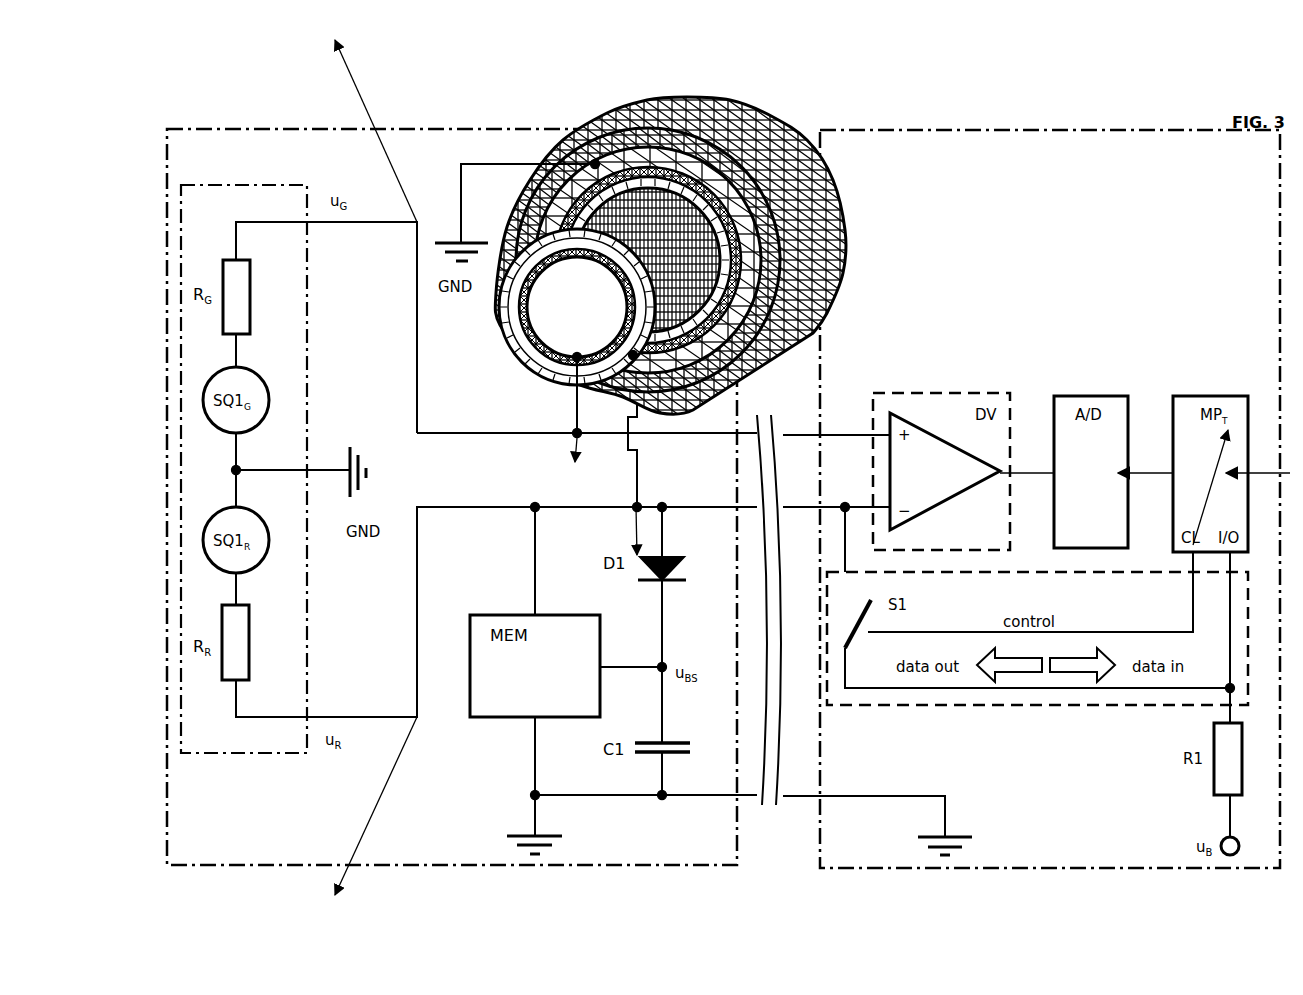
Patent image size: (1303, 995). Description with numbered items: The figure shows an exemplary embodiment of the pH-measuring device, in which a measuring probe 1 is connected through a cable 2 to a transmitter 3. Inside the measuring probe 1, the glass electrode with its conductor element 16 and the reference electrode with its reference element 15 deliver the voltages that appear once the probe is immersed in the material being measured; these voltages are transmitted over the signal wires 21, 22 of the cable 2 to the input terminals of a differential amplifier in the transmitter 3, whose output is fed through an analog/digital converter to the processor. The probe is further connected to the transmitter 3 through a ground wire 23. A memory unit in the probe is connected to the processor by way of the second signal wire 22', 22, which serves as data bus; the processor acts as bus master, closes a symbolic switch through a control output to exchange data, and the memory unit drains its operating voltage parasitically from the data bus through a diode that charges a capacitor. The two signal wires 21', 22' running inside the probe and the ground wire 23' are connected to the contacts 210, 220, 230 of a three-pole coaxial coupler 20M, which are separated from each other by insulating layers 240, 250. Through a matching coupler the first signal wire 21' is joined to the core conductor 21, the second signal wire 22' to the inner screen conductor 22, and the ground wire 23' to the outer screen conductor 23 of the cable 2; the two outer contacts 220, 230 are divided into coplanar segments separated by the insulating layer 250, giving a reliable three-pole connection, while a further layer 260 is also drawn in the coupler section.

The measuring probe 1 is at (452, 497).
The cable 2 is at (774, 610).
The transmitter 3 is at (1050, 499).
The reference element 15 is at (297, 713).
The conductor element 16 is at (293, 228).
The coaxial coupler 20M is at (848, 190).
The core conductor 21 is at (836, 422).
The first signal wire 21' is at (587, 421).
The inner screen conductor 22 is at (836, 498).
The second signal wire 22' is at (587, 495).
The outer screen conductor 23 is at (877, 811).
The ground wire 23' is at (646, 781).
The contact 210 is at (620, 305).
The outer contact 220 is at (770, 305).
The outer contact 230 is at (745, 248).
The insulating layer 240 is at (507, 323).
The insulating layer 250 is at (680, 278).
The outer sheath 260 is at (800, 207).